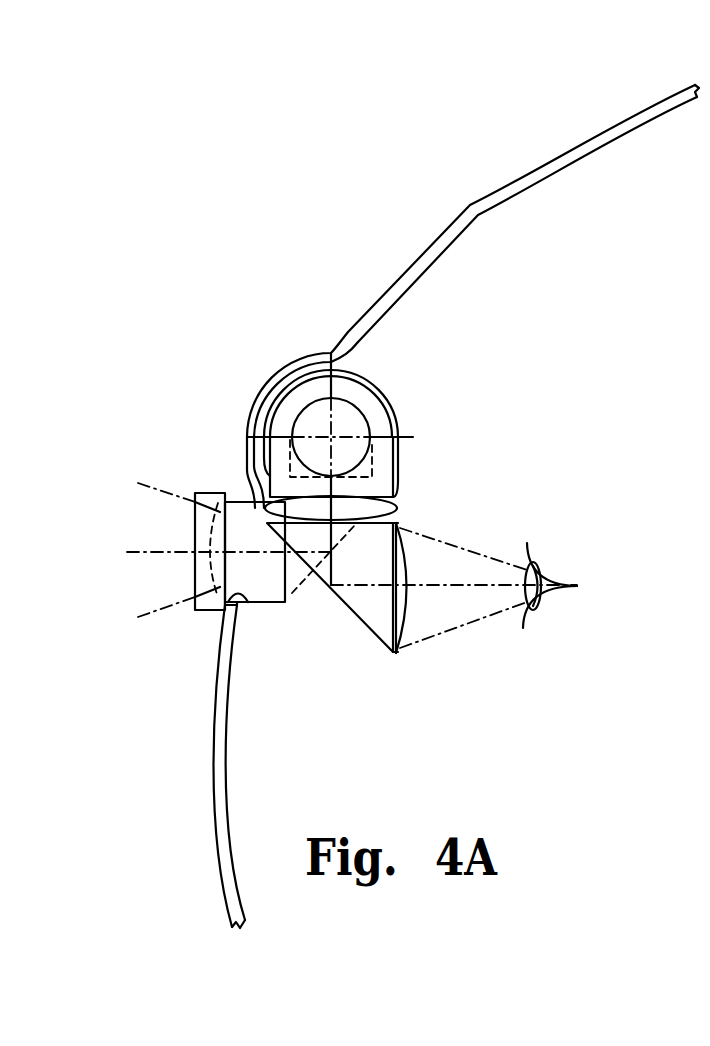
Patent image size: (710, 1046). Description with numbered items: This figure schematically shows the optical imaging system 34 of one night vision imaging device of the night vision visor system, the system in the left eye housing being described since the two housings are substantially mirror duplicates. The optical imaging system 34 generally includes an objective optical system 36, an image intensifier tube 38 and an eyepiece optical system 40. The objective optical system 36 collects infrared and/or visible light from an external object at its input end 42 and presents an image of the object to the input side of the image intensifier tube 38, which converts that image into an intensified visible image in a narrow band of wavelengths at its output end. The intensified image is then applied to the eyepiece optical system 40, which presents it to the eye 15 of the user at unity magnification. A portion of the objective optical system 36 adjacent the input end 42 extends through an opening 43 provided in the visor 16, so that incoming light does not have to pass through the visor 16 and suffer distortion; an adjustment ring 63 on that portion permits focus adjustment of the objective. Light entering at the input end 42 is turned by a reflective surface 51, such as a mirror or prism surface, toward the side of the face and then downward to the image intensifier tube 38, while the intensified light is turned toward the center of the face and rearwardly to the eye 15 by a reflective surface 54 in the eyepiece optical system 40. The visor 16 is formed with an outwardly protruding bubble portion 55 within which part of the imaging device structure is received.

The eye 15 is at (562, 565).
The visor 16 is at (210, 762).
The optical imaging system 34 is at (488, 377).
The objective optical system 36 is at (223, 474).
The image intensifier tube 38 is at (375, 376).
The eyepiece optical system 40 is at (440, 504).
The input end 42 is at (195, 574).
The opening 43 is at (250, 603).
The reflective surface 51 is at (300, 573).
The reflective surface 54 is at (388, 633).
The bubble portion 55 is at (282, 363).
The adjustment ring 63 is at (210, 493).